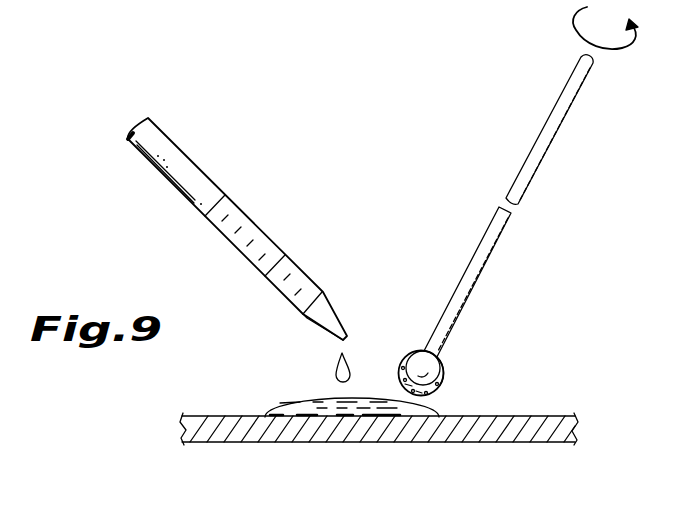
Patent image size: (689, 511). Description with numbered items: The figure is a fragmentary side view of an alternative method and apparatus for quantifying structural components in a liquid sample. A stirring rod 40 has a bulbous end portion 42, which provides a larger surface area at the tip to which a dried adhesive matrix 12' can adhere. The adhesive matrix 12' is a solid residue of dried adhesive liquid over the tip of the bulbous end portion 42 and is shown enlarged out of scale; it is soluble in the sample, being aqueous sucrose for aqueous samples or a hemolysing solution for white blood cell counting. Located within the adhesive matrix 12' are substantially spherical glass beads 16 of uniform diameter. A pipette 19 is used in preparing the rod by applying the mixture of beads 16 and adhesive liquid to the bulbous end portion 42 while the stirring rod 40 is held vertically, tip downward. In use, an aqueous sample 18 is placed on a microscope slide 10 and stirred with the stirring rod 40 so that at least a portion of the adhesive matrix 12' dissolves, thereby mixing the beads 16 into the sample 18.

The microscope slide 10 is at (216, 446).
The dried adhesive matrix 12' is at (492, 356).
The glass beads 16 is at (438, 392).
The aqueous sample 18 is at (307, 400).
The pipette 19 is at (175, 142).
The stirring rod 40 is at (544, 133).
The bulbous end portion 42 is at (413, 355).